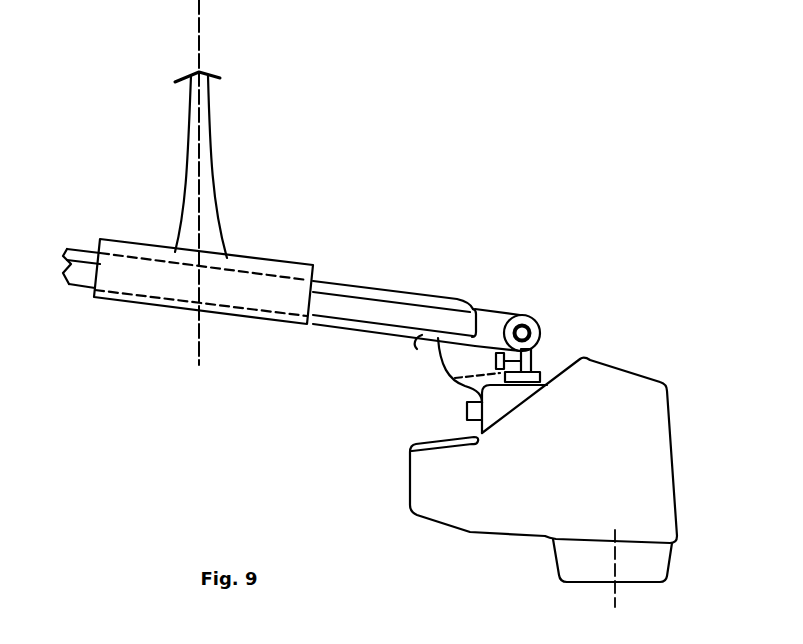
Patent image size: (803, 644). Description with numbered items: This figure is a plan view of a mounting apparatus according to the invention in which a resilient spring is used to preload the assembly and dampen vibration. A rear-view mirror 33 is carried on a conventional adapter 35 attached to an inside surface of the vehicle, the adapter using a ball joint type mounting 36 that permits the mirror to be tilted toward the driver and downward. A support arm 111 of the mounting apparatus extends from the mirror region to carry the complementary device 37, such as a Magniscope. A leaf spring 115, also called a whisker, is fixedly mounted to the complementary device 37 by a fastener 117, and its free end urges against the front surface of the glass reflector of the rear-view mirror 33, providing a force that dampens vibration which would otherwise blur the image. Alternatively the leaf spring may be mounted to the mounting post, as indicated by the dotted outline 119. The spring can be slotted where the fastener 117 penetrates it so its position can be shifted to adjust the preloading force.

The rear-view mirror 33 is at (338, 327).
The conventional adapter 35 is at (215, 200).
The ball joint type mounting 36 is at (230, 271).
The complementary device 37 is at (618, 367).
The support arm 111 is at (482, 307).
The leaf spring 115 is at (437, 362).
The fastener 117 is at (466, 410).
The dotted outline 119 is at (541, 343).